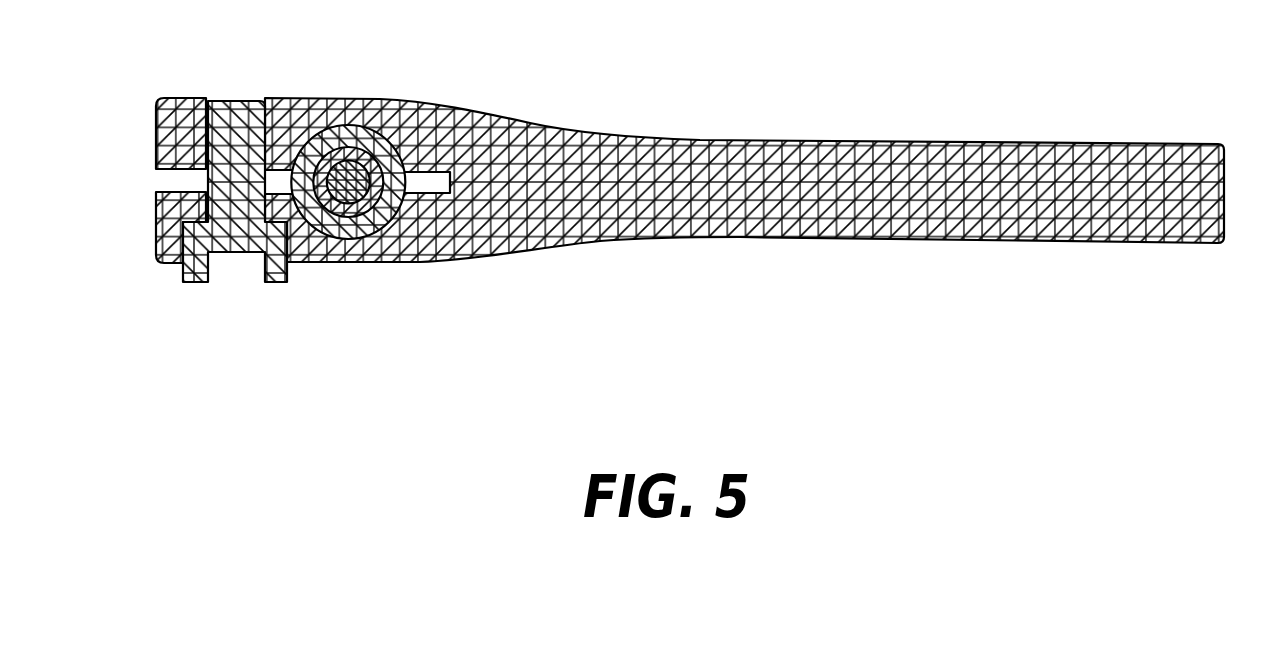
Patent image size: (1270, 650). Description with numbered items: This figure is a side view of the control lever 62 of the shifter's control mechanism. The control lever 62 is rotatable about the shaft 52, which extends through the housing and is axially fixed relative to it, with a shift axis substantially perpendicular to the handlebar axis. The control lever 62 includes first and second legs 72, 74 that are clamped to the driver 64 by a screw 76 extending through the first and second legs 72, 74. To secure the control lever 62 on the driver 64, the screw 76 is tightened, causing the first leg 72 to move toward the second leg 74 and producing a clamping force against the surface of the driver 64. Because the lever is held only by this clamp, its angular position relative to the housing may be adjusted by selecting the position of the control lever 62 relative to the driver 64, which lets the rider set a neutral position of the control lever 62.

The shaft 52 is at (367, 160).
The control lever 62 is at (750, 140).
The driver 64 is at (332, 127).
The first leg 72 is at (160, 100).
The second leg 74 is at (157, 255).
The screw 76 is at (228, 253).